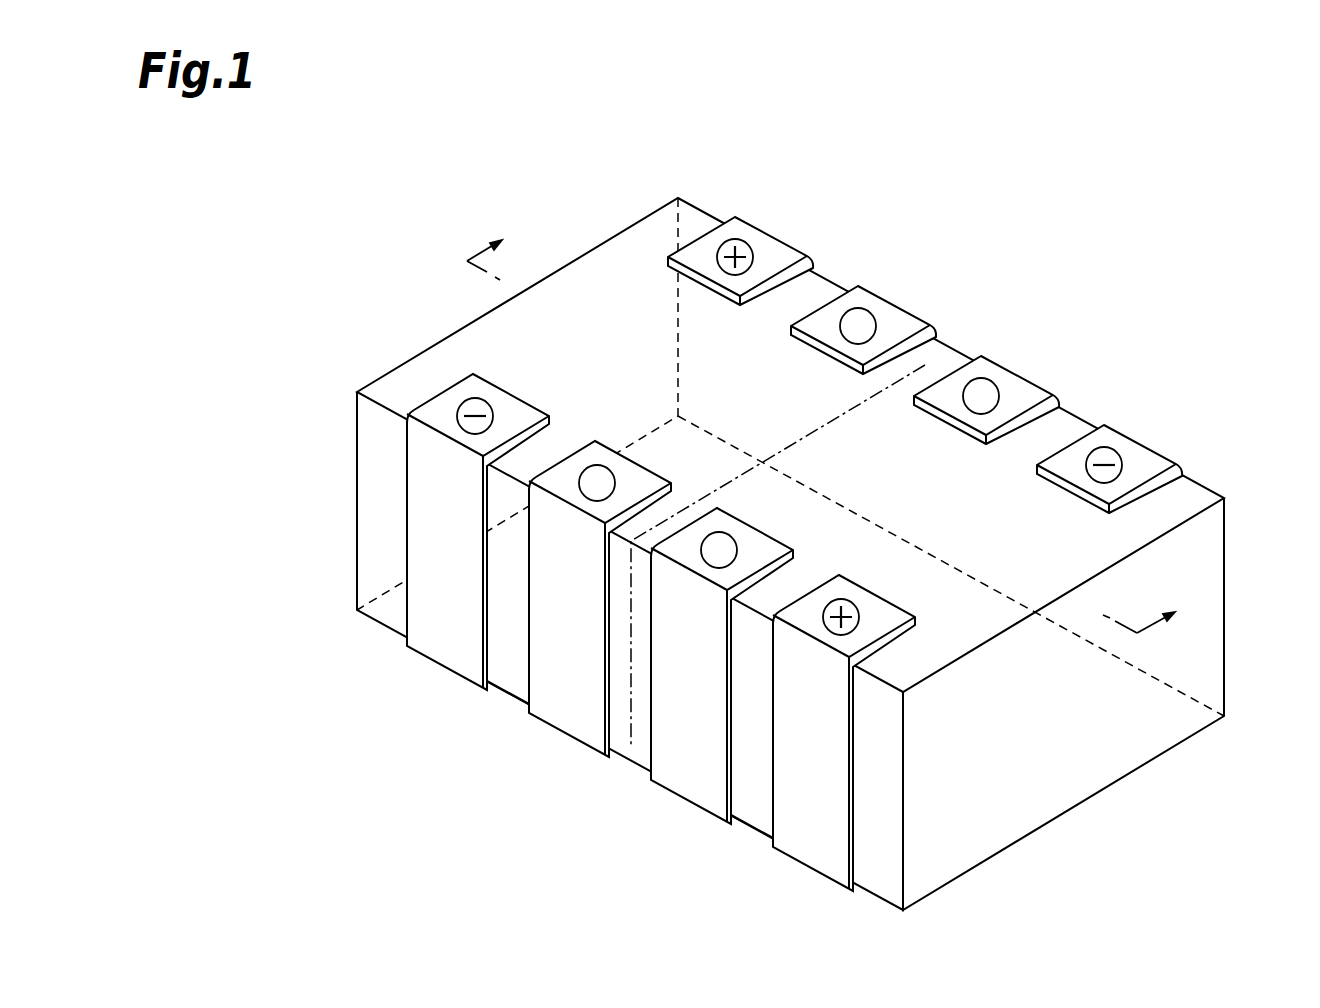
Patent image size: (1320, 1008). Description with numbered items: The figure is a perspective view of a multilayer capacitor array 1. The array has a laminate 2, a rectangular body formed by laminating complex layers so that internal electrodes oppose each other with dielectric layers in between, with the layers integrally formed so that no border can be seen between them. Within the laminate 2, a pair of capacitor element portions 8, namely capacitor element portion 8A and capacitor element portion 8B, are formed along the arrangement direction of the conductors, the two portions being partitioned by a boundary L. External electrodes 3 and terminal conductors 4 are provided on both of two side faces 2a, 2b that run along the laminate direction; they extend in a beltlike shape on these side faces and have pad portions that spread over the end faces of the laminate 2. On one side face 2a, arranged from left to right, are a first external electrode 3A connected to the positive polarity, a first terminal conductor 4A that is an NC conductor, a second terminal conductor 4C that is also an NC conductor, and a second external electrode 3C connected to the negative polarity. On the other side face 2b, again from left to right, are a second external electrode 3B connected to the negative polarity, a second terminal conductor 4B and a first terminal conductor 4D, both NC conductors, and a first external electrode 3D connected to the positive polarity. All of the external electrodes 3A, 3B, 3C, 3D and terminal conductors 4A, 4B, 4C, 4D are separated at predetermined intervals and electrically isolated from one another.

The multilayer capacitor array 1 is at (393, 222).
The laminate 2 is at (633, 245).
The side face 2a is at (1200, 555).
The side face 2b is at (753, 792).
The external electrodes 3 is at (804, 530).
The first external electrode 3A is at (755, 238).
The second external electrode 3B is at (505, 410).
The second external electrode 3C is at (1145, 460).
The first external electrode 3D is at (870, 615).
The terminal conductors 4 is at (800, 529).
The first terminal conductor 4A is at (887, 307).
The second terminal conductor 4B is at (642, 478).
The second terminal conductor 4C is at (1018, 390).
The first terminal conductor 4D is at (760, 550).
The capacitor element portions 8 is at (584, 797).
The capacitor element portion 8A is at (515, 710).
The capacitor element portion 8B is at (714, 845).
The boundary L is at (788, 440).